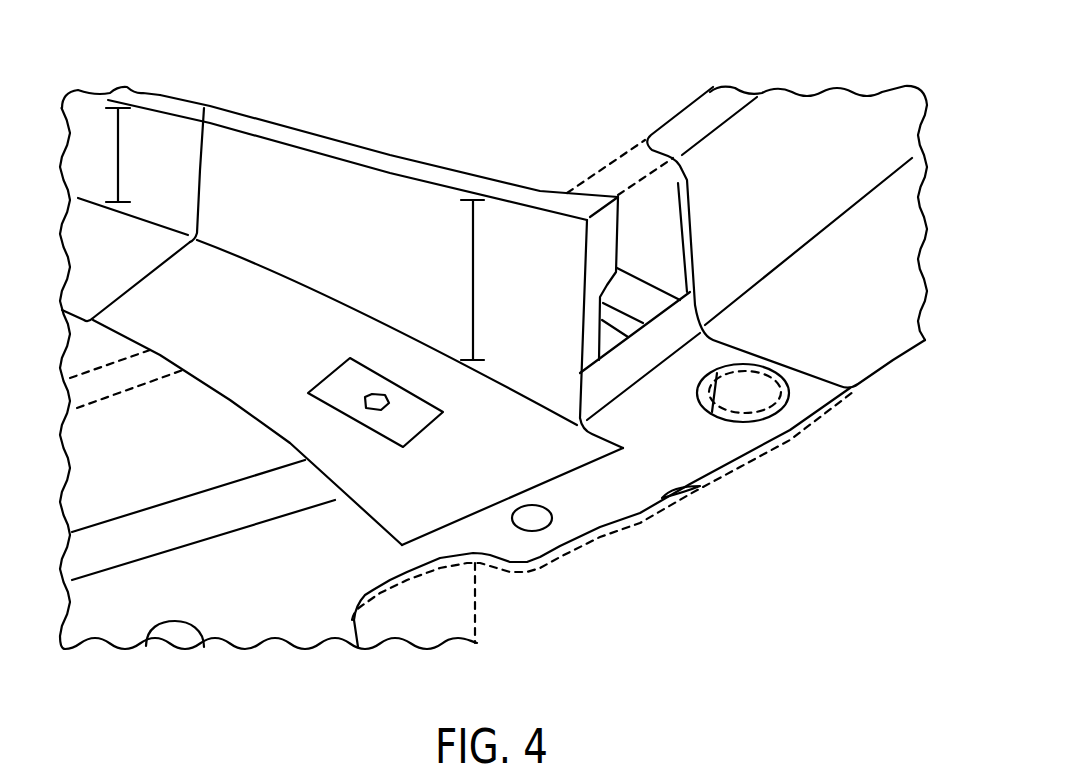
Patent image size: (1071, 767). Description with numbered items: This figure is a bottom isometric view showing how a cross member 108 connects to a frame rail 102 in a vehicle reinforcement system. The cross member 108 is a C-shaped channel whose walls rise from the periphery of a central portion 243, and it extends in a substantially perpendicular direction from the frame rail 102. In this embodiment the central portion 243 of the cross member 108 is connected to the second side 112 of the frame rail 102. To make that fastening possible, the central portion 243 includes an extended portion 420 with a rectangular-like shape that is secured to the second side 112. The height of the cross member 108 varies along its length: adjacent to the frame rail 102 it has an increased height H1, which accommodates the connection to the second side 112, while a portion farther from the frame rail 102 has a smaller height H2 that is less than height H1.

The cross member 108 is at (300, 117).
The frame rail 102 is at (603, 170).
The central portion 243 is at (243, 387).
The extended portion 420 is at (557, 463).
The second side 112 is at (700, 456).
The height H1 is at (468, 225).
The height H2 is at (120, 140).